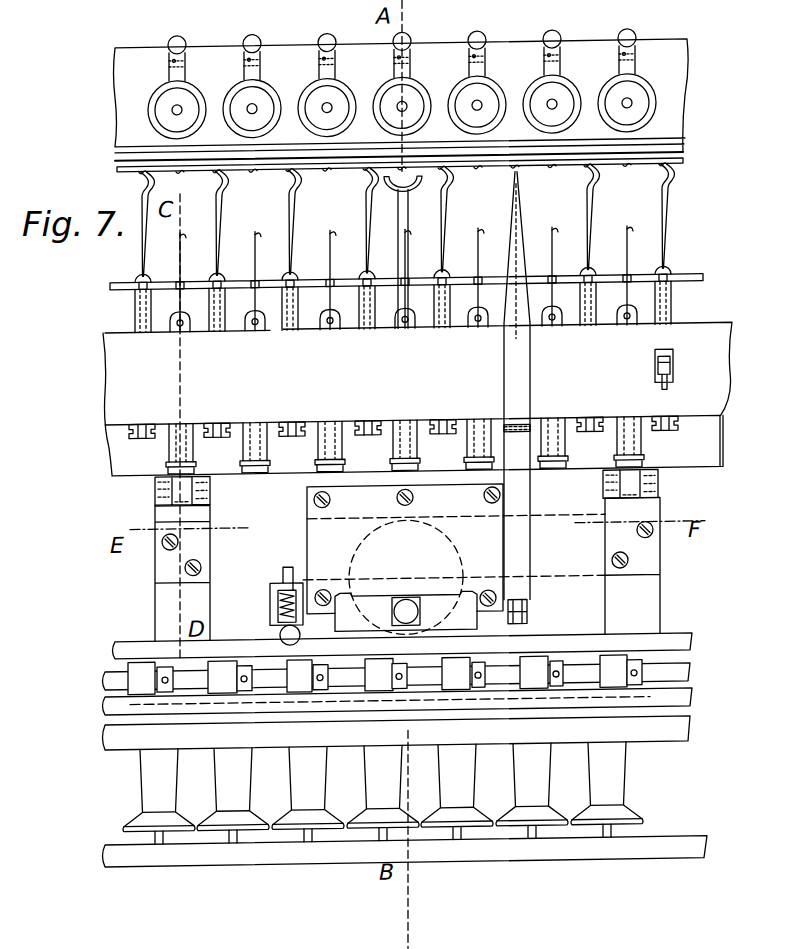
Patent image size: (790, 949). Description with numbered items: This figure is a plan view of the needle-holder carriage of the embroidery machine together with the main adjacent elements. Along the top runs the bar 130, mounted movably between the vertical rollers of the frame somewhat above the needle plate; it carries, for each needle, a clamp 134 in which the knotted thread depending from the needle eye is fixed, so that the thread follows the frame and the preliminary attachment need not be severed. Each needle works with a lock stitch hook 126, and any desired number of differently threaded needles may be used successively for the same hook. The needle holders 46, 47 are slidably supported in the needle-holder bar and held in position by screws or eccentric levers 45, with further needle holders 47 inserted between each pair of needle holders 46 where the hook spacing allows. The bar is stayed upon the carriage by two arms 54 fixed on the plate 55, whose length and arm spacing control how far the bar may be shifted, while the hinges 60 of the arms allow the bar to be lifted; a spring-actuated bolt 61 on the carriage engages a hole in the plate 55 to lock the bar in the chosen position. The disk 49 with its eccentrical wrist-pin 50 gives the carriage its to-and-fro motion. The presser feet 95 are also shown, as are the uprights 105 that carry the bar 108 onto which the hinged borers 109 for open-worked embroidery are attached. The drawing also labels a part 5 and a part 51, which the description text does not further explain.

The needle plate frame 5 is at (719, 377).
The eccentric lever 45 is at (670, 372).
The needle holder 46 is at (403, 438).
The further needle holder 47 is at (405, 457).
The disk 49 is at (456, 559).
The eccentrical wrist-pin 50 is at (405, 610).
The slide block 51 is at (406, 611).
The arm 54 is at (157, 593).
The plate 55 is at (237, 580).
The hinge 60 is at (157, 493).
The bolt 61 is at (282, 608).
The presser foot 95 is at (398, 209).
The upright 105 is at (527, 623).
The bar 108 is at (693, 287).
The borer 109 is at (516, 219).
The lock stitch hook 126 is at (652, 112).
The bar 130 is at (683, 169).
The clamp 134 is at (446, 178).